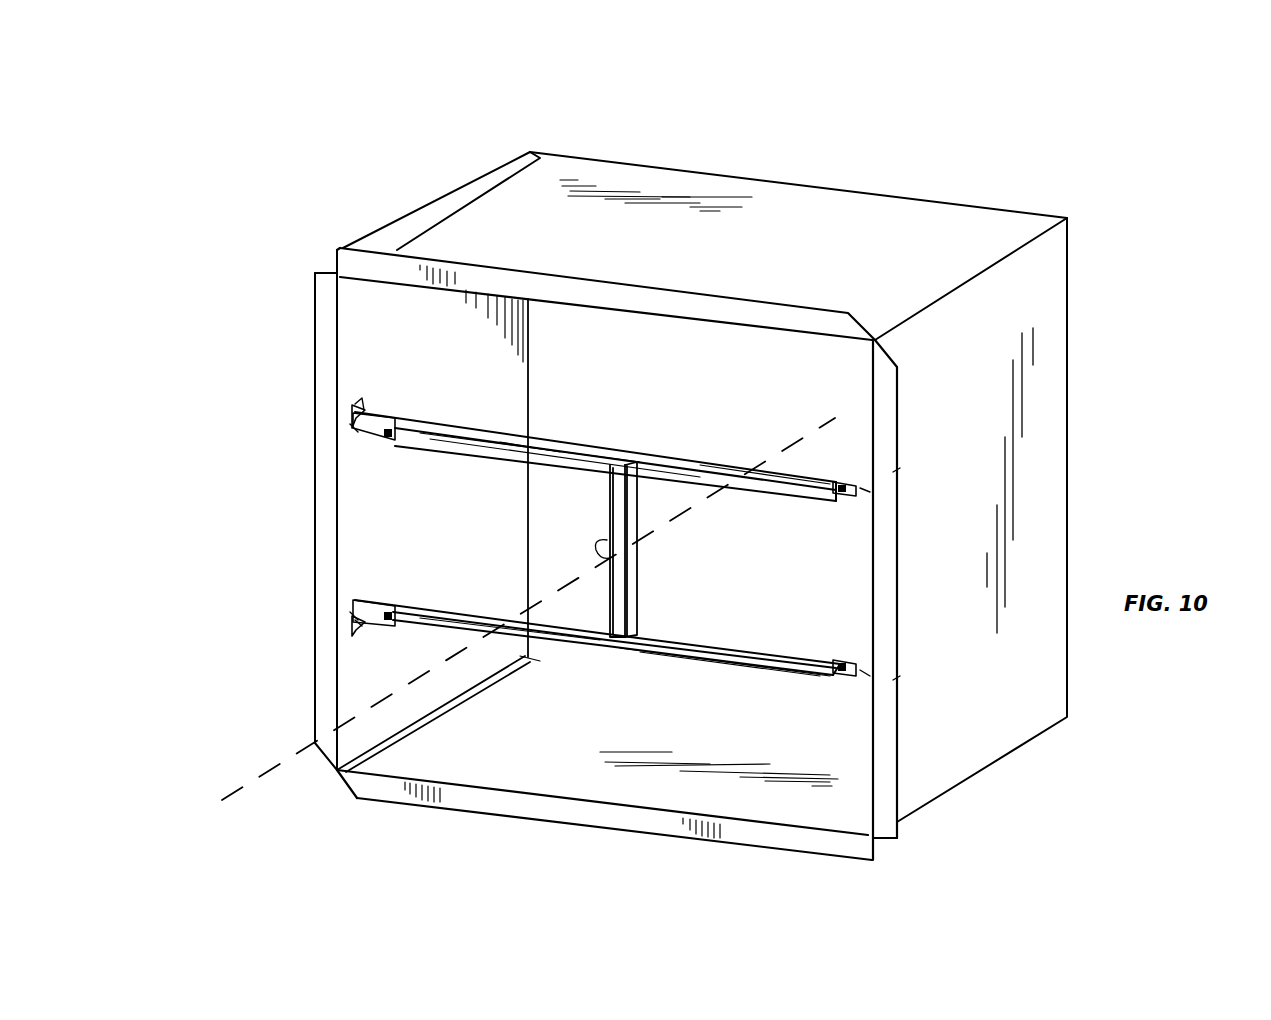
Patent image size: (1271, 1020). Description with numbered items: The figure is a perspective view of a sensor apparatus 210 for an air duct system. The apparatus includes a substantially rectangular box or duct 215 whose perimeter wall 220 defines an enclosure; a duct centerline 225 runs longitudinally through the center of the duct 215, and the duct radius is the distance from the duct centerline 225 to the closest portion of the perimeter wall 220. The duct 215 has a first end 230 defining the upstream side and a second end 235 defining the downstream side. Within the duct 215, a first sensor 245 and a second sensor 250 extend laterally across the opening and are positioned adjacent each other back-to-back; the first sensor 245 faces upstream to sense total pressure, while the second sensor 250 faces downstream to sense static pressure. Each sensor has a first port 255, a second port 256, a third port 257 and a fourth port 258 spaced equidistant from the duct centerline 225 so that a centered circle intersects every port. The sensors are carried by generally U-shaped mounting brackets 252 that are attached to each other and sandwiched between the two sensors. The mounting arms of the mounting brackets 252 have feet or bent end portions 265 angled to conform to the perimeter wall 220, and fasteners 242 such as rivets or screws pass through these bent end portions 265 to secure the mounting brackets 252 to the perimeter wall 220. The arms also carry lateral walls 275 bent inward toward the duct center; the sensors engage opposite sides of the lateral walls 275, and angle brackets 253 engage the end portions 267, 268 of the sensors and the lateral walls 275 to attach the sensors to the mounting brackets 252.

The sensor apparatus 210 is at (800, 99).
The duct 215 is at (428, 208).
The perimeter wall 220 is at (1050, 296).
The duct centerline 225 is at (222, 800).
The first end 230 is at (323, 320).
The second end 235 is at (830, 184).
The fasteners 242 is at (357, 402).
The first sensor 245 is at (628, 650).
The second sensor 250 is at (638, 603).
The mounting brackets 252 is at (588, 438).
The angle brackets 253 is at (393, 430).
The first port 255 is at (388, 438).
The second port 256 is at (531, 458).
The third port 257 is at (697, 656).
The fourth port 258 is at (523, 660).
The bent end portions 265 is at (350, 420).
The end portion 267 is at (402, 438).
The end portion 268 is at (410, 621).
The lateral walls 275 is at (358, 432).